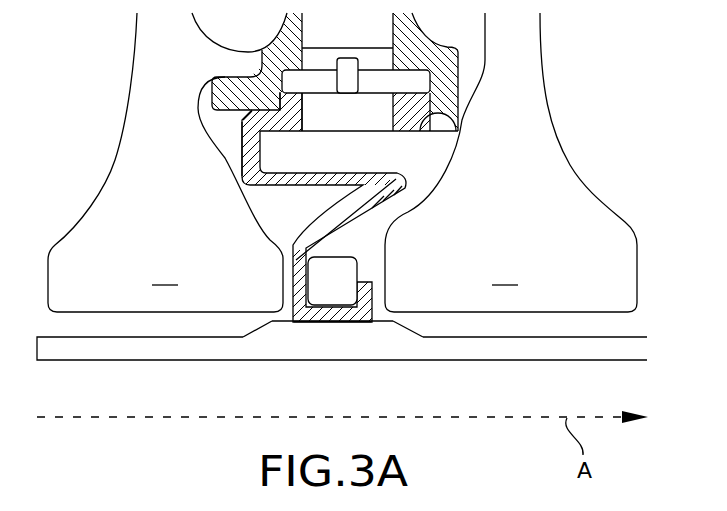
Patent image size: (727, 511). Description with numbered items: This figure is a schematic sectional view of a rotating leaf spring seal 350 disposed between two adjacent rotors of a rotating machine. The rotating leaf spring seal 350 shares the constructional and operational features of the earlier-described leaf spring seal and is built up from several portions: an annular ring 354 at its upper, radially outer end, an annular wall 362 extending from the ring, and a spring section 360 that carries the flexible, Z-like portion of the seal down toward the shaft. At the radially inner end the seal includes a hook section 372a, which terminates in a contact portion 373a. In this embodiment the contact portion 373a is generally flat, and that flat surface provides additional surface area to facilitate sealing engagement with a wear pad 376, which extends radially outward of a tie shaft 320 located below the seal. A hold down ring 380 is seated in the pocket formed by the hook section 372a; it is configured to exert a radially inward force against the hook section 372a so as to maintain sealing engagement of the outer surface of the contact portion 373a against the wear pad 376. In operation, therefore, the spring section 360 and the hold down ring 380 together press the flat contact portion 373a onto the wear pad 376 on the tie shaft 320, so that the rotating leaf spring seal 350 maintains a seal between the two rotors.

The tie shaft 320 is at (523, 348).
The rotating leaf spring seal 350 is at (222, 145).
The annular ring 354 is at (446, 126).
The spring section 360 is at (362, 212).
The annular wall 362 is at (240, 165).
The hook section 372a is at (290, 313).
The contact portion 373a is at (313, 323).
The wear pad 376 is at (292, 337).
The hold down ring 380 is at (333, 283).